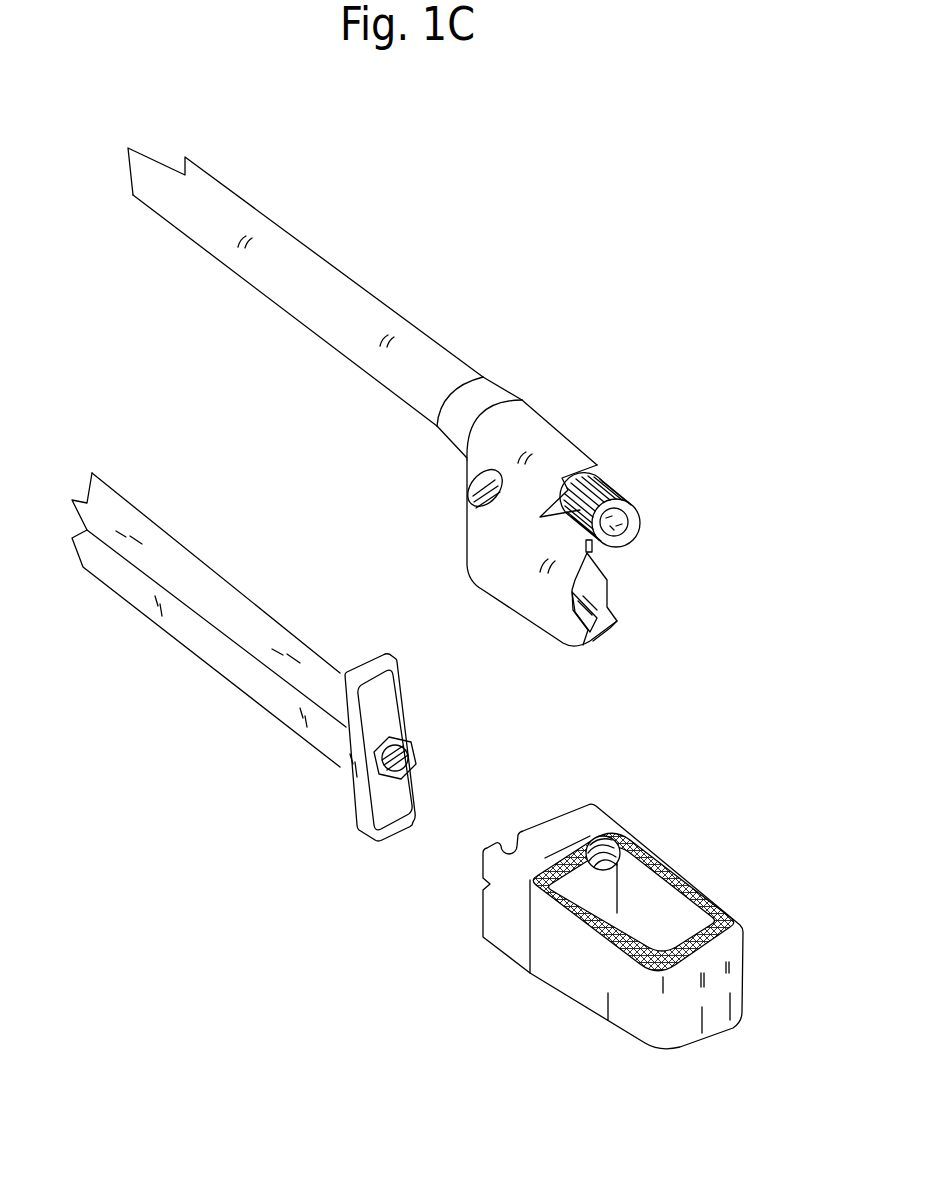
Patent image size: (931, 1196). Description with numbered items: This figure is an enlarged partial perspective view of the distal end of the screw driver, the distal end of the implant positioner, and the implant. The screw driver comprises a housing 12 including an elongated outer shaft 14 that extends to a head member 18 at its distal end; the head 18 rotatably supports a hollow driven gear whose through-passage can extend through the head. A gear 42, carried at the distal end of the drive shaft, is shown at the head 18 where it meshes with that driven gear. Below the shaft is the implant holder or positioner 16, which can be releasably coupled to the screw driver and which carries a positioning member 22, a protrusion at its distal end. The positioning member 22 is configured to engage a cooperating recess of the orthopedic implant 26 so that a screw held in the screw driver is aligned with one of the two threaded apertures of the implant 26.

The housing 12 is at (383, 250).
The elongated outer shaft 14 is at (289, 264).
The implant holder or positioner 16 is at (158, 650).
The head member 18 is at (533, 437).
The positioning member 22 is at (417, 742).
The orthopedic implant 26 is at (694, 845).
The gear 42 is at (630, 490).